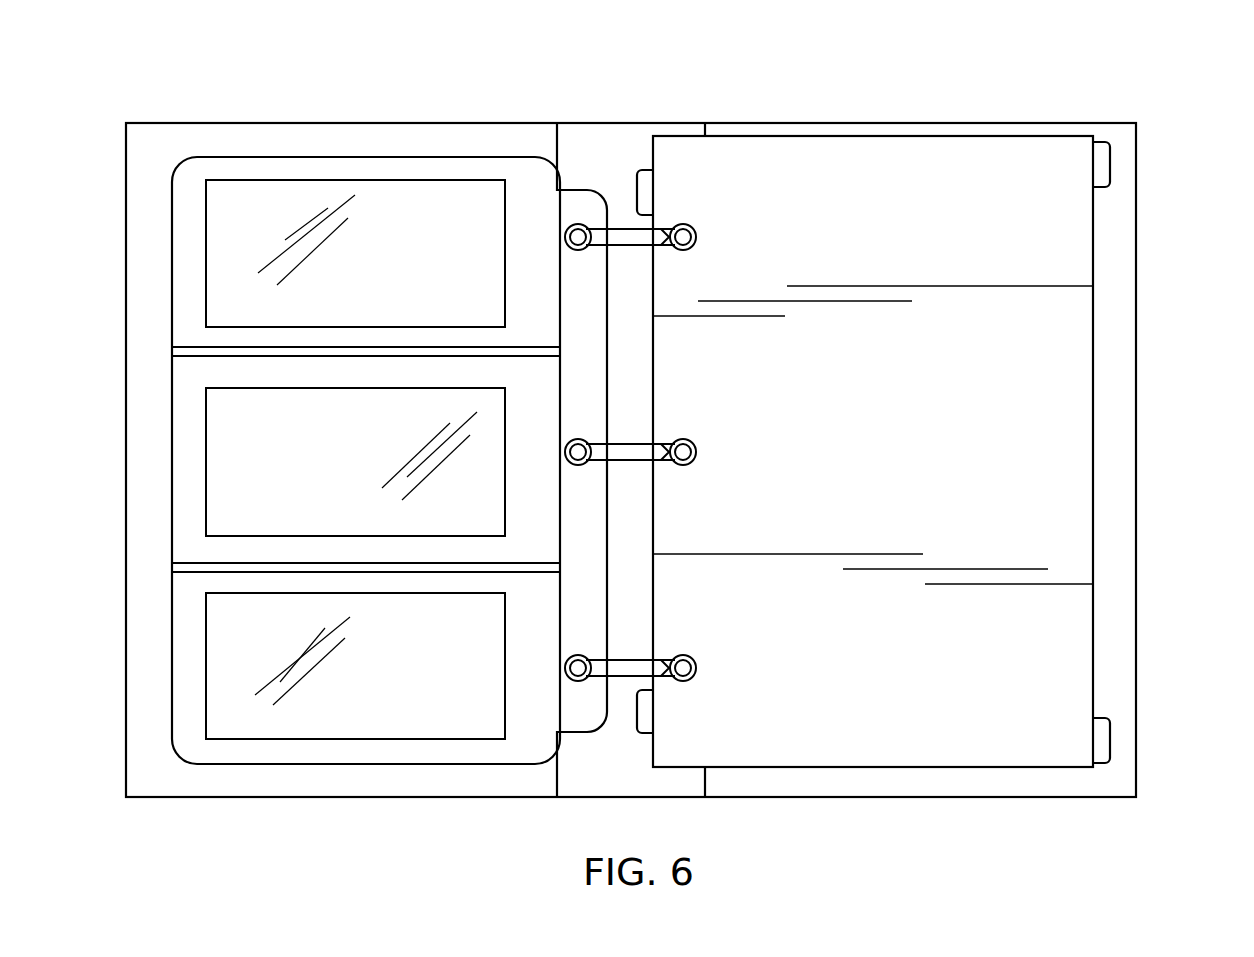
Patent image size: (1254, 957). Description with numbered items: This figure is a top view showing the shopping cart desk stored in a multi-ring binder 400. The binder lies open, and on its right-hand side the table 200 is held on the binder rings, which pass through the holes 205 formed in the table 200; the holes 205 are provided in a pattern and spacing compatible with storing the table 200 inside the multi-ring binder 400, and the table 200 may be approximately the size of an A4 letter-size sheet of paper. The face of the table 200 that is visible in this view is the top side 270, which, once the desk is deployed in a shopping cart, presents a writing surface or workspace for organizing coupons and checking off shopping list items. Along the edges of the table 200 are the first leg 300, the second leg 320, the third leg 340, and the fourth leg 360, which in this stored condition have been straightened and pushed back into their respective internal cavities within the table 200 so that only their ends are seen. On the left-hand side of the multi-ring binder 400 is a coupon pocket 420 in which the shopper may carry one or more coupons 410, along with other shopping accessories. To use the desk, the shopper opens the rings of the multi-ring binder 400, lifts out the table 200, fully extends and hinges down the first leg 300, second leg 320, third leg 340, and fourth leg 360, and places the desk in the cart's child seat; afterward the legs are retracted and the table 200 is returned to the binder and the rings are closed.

The table 200 is at (1095, 465).
The holes 205 is at (700, 667).
The top side 270 is at (972, 185).
The first leg 300 is at (1105, 162).
The second leg 320 is at (1108, 748).
The third leg 340 is at (640, 187).
The fourth leg 360 is at (642, 728).
The multi-ring binder 400 is at (1136, 585).
The coupons 410 is at (282, 205).
The coupon pocket 420 is at (222, 155).